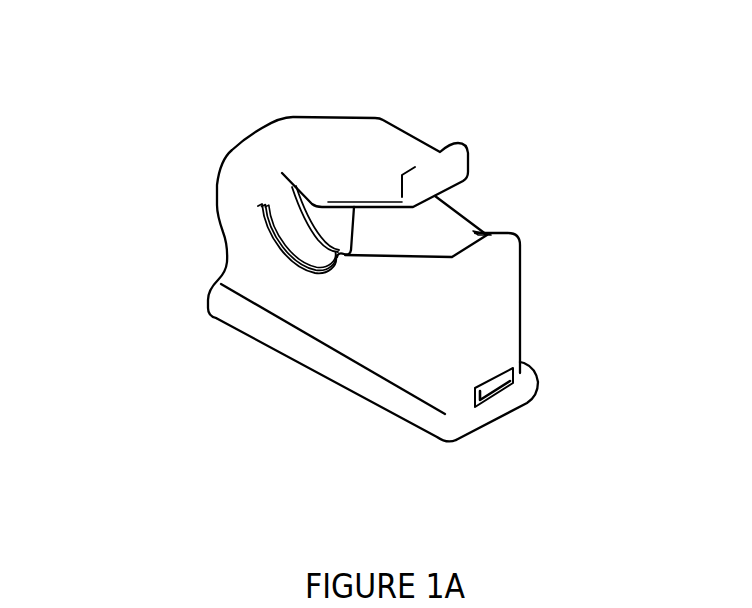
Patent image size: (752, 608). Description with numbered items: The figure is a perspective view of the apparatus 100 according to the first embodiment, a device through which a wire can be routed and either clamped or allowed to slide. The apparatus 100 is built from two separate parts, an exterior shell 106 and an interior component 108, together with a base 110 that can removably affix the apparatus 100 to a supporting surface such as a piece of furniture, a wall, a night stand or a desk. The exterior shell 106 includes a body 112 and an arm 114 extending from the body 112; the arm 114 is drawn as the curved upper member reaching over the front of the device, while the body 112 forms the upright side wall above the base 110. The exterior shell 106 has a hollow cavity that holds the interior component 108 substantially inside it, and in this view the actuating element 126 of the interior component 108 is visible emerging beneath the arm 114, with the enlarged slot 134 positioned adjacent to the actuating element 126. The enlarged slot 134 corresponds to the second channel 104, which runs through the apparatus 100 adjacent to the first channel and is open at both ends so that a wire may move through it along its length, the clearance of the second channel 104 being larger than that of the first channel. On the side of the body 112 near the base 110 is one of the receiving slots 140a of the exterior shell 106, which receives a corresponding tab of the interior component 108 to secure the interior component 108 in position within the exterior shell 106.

The apparatus 100 is at (162, 93).
The arm 114 is at (403, 138).
The actuating element 126 is at (443, 220).
The interior component 108 is at (467, 232).
The exterior shell 106 is at (522, 272).
The body 112 is at (498, 323).
The base 110 is at (340, 367).
The receiving slot 140a is at (493, 387).
The enlarged slot 134 is at (293, 233).
The second channel 104 is at (335, 221).